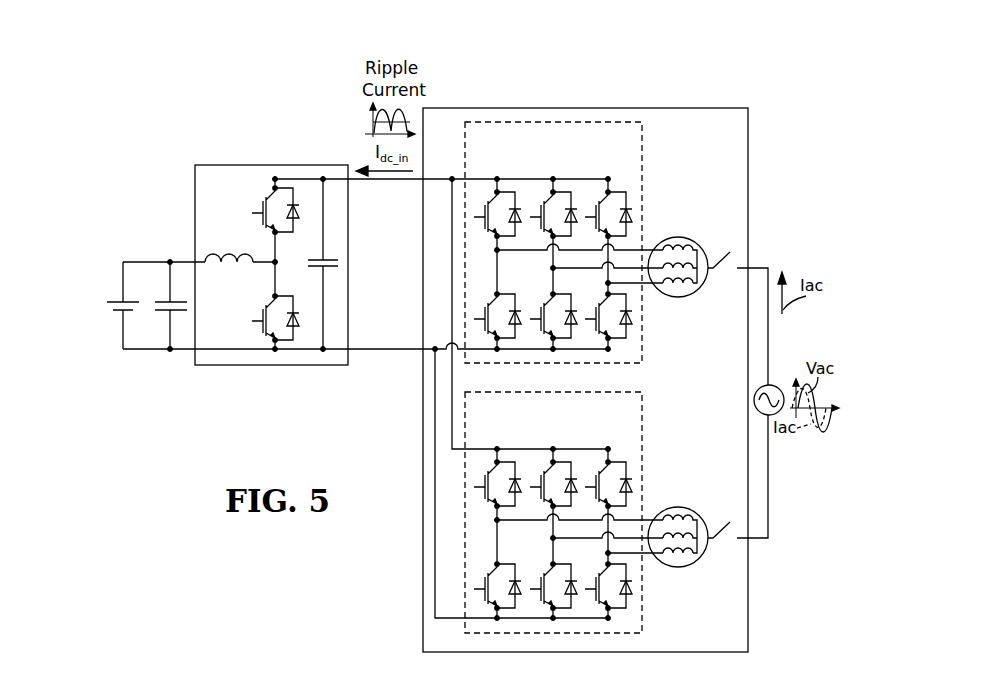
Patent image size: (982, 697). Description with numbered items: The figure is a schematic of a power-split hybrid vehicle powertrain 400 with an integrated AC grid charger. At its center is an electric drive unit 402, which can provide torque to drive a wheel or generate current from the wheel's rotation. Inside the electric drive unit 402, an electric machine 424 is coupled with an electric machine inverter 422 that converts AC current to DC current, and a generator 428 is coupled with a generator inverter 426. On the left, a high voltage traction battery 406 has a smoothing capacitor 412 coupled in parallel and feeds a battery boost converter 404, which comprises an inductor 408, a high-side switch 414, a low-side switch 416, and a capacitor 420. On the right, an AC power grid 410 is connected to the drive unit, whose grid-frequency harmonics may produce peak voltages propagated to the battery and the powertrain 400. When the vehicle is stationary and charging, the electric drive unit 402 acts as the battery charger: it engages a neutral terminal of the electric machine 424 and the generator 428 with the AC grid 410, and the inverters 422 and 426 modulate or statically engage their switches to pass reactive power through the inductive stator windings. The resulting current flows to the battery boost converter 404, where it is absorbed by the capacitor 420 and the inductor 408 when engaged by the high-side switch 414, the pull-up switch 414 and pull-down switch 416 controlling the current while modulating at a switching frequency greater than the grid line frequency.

The hybrid vehicle powertrain 400 is at (688, 44).
The electric drive unit 402 is at (581, 109).
The battery boost converter 404 is at (465, 260).
The high voltage traction battery 406 is at (120, 312).
The inductor 408 is at (207, 256).
The AC power grid 410 is at (758, 411).
The smoothing capacitor 412 is at (176, 312).
The high-side switch 414 is at (262, 200).
The low-side switch 416 is at (266, 322).
The capacitor 420 is at (338, 262).
The electric machine inverter 422 is at (642, 177).
The electric machine 424 is at (672, 297).
The generator inverter 426 is at (642, 427).
The generator 428 is at (672, 567).